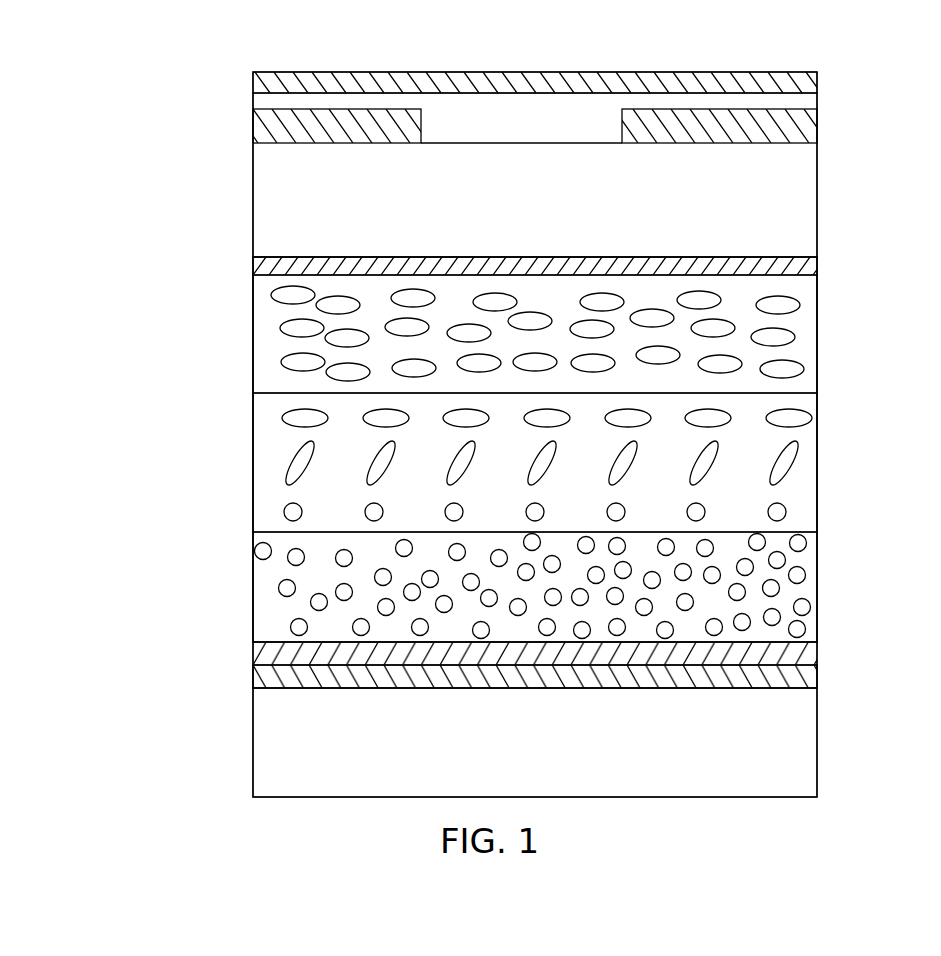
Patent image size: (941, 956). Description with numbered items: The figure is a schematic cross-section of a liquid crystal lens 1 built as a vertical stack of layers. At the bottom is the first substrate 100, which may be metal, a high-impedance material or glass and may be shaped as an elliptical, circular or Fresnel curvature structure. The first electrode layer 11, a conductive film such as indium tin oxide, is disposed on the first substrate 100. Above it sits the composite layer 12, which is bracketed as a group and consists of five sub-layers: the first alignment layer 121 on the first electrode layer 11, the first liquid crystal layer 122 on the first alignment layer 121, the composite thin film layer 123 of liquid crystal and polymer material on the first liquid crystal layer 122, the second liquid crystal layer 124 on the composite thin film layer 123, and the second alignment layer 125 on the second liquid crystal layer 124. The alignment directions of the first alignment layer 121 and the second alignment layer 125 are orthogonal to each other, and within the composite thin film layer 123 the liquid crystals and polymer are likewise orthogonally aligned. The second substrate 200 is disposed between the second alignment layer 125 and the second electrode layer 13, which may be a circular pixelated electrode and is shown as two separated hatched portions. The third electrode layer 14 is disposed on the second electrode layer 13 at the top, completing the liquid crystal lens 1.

The liquid crystal lens 1 is at (122, 80).
The third electrode layer 14 is at (253, 83).
The second electrode layer 13 is at (817, 127).
The second substrate 200 is at (253, 193).
The composite layer 12 is at (232, 257).
The second alignment layer 125 is at (817, 265).
The second liquid crystal layer 124 is at (817, 335).
The composite thin film layer 123 is at (817, 460).
The first liquid crystal layer 122 is at (817, 592).
The first alignment layer 121 is at (817, 665).
The first electrode layer 11 is at (253, 672).
The first substrate 100 is at (253, 750).